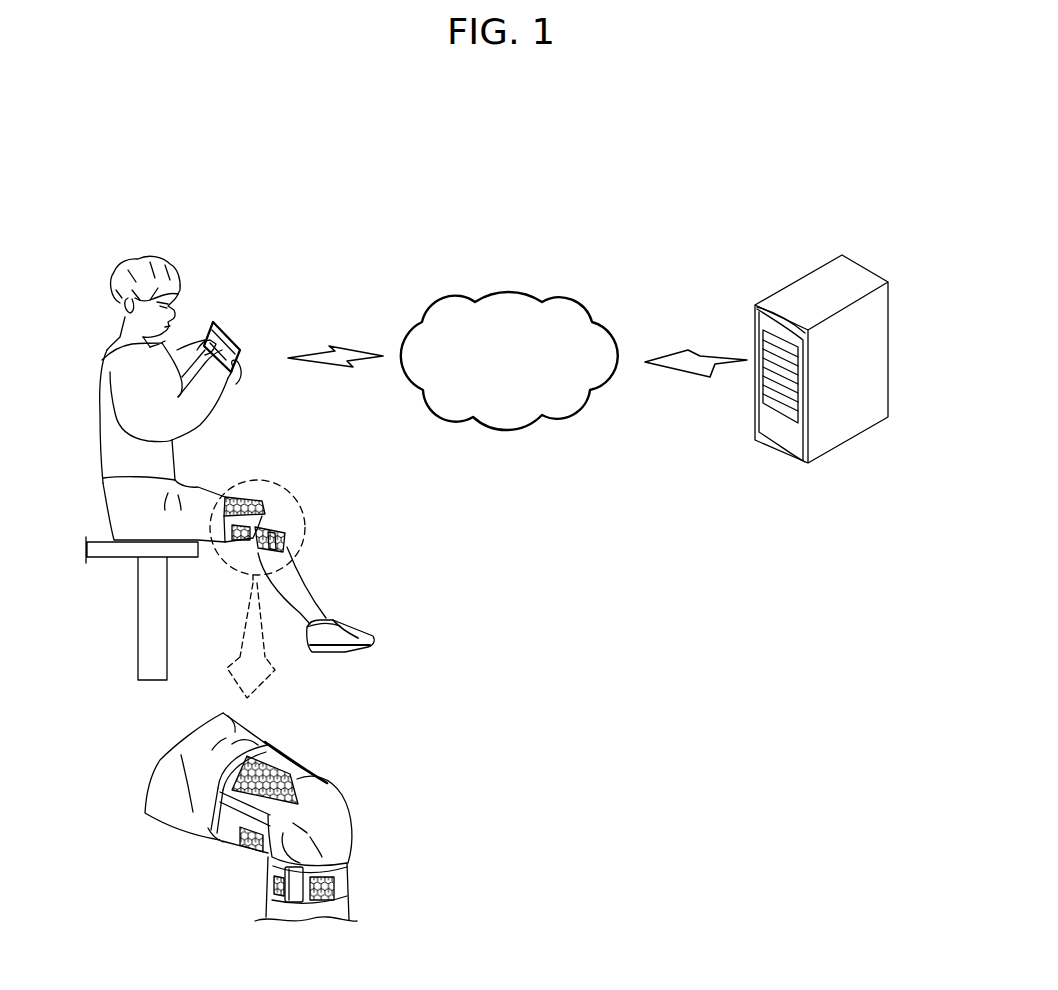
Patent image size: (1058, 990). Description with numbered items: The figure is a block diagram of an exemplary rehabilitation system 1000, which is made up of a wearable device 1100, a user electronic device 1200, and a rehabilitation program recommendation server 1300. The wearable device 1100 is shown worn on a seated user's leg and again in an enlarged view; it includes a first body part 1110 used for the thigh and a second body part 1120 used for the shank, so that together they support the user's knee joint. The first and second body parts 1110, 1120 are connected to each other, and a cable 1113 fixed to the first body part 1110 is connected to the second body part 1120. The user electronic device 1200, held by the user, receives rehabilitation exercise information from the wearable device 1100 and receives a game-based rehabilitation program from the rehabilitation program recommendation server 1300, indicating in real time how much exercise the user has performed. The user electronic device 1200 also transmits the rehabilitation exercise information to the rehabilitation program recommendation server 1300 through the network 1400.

The rehabilitation system 1000 is at (658, 178).
The wearable device 1100 is at (264, 492).
The first body part 1110 is at (250, 483).
The cable 1113 is at (280, 520).
The second body part 1120 is at (298, 546).
The user electronic device 1200 is at (231, 336).
The rehabilitation program recommendation server 1300 is at (858, 272).
The network 1400 is at (517, 292).